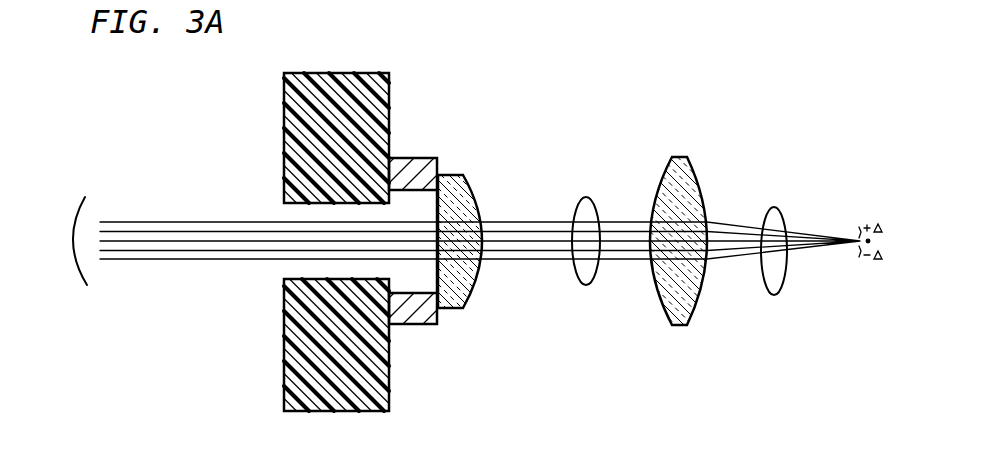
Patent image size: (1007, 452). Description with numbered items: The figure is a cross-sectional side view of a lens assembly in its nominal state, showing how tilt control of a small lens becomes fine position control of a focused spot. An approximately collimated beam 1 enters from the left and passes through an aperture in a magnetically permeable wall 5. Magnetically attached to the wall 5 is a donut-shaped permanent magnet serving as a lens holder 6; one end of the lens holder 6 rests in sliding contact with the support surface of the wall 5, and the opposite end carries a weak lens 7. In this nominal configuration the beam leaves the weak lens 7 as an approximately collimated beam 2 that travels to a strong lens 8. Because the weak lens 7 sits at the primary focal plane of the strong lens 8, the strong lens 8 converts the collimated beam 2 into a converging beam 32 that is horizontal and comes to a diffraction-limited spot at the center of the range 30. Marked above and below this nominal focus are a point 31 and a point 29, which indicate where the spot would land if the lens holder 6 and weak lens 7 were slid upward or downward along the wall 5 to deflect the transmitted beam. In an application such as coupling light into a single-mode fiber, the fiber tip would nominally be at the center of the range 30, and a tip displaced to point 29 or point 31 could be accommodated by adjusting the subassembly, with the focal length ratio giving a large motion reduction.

The collimated beam 1 is at (75, 241).
The magnetically permeable wall 5 is at (284, 121).
The lens holder 6 is at (410, 157).
The weak lens 7 is at (476, 200).
The approximately collimated beam 2 is at (587, 286).
The strong lens 8 is at (706, 171).
The converging beam 32 is at (776, 297).
The upper spot point 31 is at (861, 229).
The lower spot point 29 is at (861, 256).
The center of the range 30 is at (878, 241).